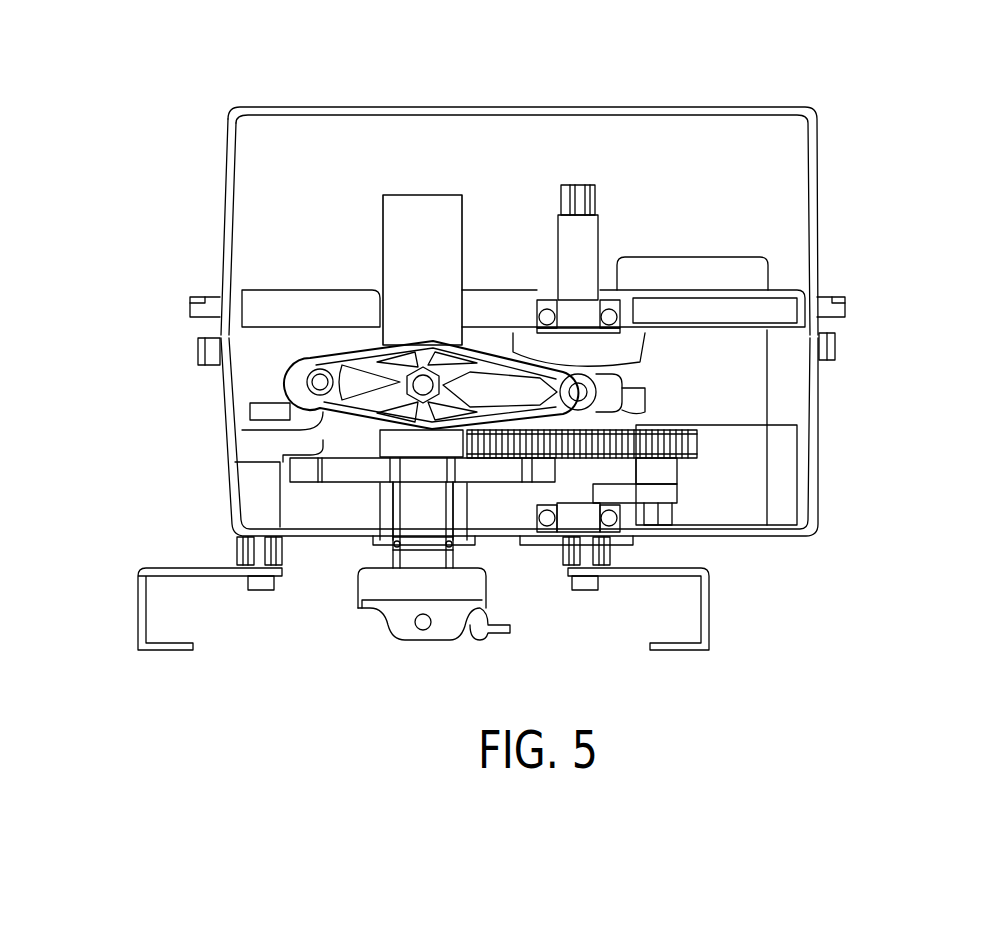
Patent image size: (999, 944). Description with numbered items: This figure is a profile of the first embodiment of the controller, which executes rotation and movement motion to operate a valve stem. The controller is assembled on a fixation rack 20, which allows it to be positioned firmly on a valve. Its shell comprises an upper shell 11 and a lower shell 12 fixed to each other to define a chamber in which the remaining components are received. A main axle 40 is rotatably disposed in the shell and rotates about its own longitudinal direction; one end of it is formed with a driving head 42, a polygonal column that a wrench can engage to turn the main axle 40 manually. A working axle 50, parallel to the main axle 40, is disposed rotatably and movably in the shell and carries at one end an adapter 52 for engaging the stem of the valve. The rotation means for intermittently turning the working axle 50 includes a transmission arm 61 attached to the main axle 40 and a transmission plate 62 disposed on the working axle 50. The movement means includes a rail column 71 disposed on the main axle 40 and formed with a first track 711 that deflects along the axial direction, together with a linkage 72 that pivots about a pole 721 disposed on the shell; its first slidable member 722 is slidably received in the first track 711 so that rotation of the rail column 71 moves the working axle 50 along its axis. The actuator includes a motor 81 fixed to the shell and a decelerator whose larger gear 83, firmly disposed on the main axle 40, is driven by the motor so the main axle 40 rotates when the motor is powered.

The upper shell 11 is at (811, 134).
The lower shell 12 is at (812, 520).
The fixation rack 20 is at (709, 623).
The main axle 40 is at (587, 250).
The driving head 42 is at (577, 195).
The working axle 50 is at (405, 507).
The adapter 52 is at (388, 598).
The transmission arm 61 is at (657, 493).
The transmission plate 62 is at (290, 468).
The rail column 71 is at (613, 343).
The first track 711 is at (620, 398).
The linkage 72 is at (362, 353).
The pole 721 is at (300, 381).
The first slidable member 722 is at (578, 395).
The motor 81 is at (725, 272).
The larger gear 83 is at (694, 428).